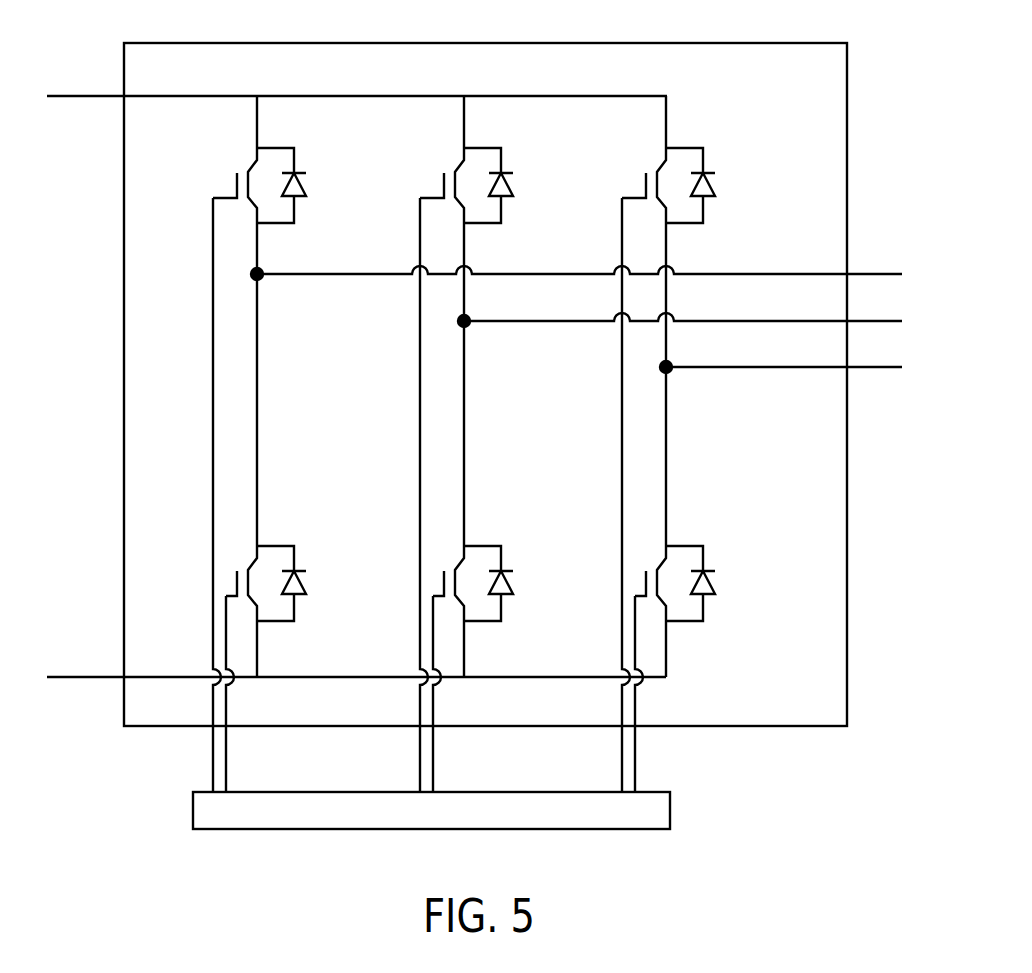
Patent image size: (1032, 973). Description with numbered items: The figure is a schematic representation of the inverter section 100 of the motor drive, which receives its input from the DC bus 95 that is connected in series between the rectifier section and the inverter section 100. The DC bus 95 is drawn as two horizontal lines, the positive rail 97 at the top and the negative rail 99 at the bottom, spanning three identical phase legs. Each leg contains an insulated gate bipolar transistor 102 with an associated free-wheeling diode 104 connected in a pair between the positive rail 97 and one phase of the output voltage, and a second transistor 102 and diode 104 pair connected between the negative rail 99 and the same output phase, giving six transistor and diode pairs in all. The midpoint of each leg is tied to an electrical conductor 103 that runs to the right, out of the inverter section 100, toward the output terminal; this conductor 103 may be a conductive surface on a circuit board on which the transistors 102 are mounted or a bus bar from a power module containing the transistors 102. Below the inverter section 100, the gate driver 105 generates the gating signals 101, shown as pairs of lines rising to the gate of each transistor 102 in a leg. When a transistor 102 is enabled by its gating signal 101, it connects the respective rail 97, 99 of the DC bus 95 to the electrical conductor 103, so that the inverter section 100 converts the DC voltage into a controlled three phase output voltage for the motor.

The inverter section 100 is at (487, 43).
The DC bus 95 is at (350, 408).
The positive rail 97 is at (78, 98).
The negative rail 99 is at (78, 679).
The gating signals 101 is at (226, 767).
The insulated gate bipolar transistor 102 is at (250, 156).
The electrical conductor 103 is at (878, 326).
The free-wheeling diode 104 is at (306, 183).
The gate driver 105 is at (672, 810).